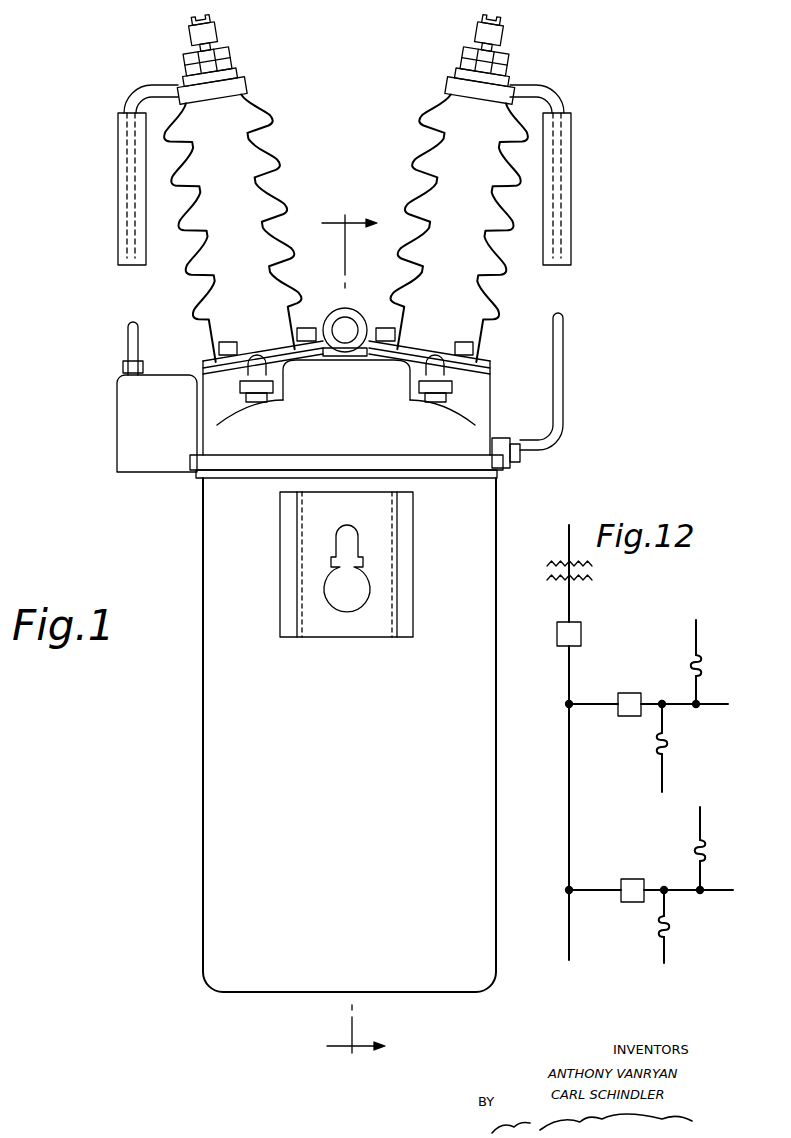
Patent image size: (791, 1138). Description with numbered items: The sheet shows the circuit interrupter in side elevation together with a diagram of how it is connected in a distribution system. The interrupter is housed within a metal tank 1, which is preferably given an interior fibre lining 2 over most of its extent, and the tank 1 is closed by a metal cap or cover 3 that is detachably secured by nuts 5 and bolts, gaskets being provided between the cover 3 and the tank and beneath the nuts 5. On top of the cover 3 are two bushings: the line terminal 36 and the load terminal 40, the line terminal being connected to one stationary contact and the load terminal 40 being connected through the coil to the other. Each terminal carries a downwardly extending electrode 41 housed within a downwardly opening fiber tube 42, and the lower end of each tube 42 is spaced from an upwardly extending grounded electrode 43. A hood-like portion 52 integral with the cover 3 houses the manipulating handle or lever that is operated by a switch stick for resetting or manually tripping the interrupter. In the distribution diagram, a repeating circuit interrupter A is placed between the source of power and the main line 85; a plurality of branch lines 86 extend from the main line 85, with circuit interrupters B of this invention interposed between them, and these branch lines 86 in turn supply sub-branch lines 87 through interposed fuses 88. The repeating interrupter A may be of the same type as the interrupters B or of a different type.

In FIG. 1, the tank 1 is at (203, 802).
In FIG. 1, the interior fibre lining 2 is at (353, 636).
In FIG. 1, the cap or cover 3 is at (491, 393).
In FIG. 1, the nuts 5 is at (246, 371).
In FIG. 1, the line terminal 36 is at (498, 54).
In FIG. 1, the load terminal 40 is at (186, 52).
In FIG. 1, the downwardly extending electrodes 41 is at (131, 149).
In FIG. 1, the fiber tubes 42 is at (118, 228).
In FIG. 1, the grounded electrodes 43 is at (126, 342).
In FIG. 1, the hood-like portion 52 is at (117, 418).
In FIG. 12, the main line 85 is at (569, 795).
In FIG. 12, the branch lines 86 is at (713, 705).
In FIG. 12, the sub-branch lines 87 is at (697, 632).
In FIG. 12, the fuses 88 is at (694, 666).
In FIG. 12, the repeating circuit interrupter A is at (574, 640).
In FIG. 12, the circuit interrupters B is at (629, 693).